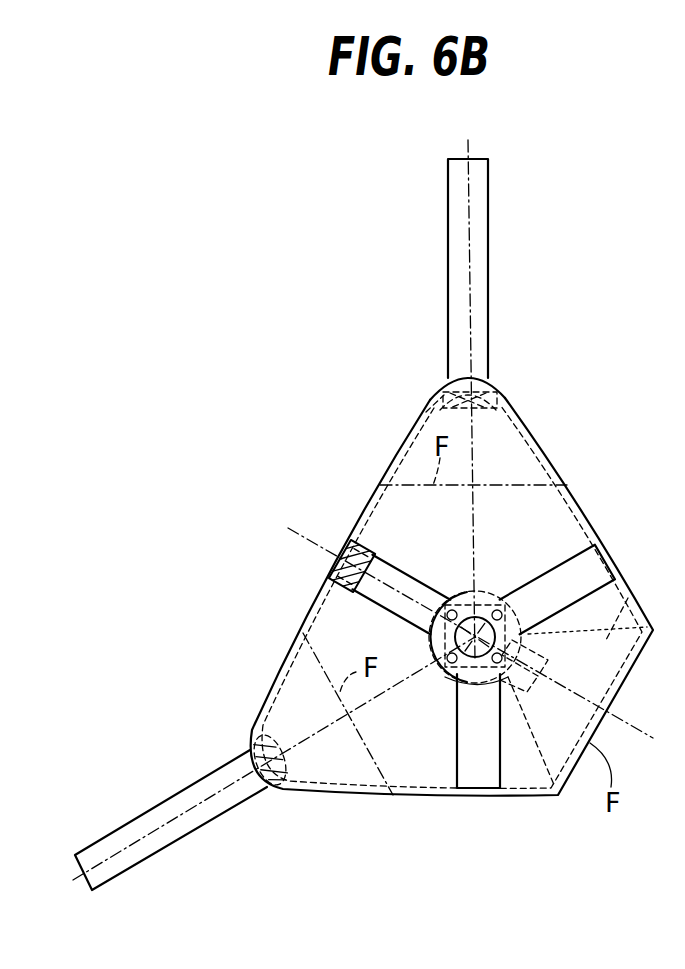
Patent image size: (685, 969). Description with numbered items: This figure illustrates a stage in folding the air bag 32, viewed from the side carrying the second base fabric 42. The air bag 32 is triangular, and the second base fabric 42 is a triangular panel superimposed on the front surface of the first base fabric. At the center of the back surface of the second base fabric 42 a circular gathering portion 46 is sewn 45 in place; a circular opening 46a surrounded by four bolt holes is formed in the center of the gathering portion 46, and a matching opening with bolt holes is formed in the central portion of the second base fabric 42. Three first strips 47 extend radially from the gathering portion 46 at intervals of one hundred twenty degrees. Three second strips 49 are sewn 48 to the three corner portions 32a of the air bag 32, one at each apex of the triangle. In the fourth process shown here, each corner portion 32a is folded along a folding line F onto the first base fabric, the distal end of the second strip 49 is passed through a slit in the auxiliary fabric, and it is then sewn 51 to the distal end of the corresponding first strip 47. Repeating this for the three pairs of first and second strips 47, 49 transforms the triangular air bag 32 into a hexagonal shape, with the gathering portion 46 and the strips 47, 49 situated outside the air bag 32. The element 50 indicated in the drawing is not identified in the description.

The air bag 32 is at (457, 629).
The corner portion 32a is at (518, 452).
The second base fabric 42 is at (427, 773).
The sewn seam 45 is at (546, 666).
The gathering portion 46 is at (456, 586).
The circular opening 46a is at (453, 682).
The first strip 47 is at (570, 568).
The sewn seam 48 is at (490, 365).
The second strip 49 is at (481, 218).
The peripheral flange 50 is at (405, 432).
The sewn seam 51 is at (365, 553).